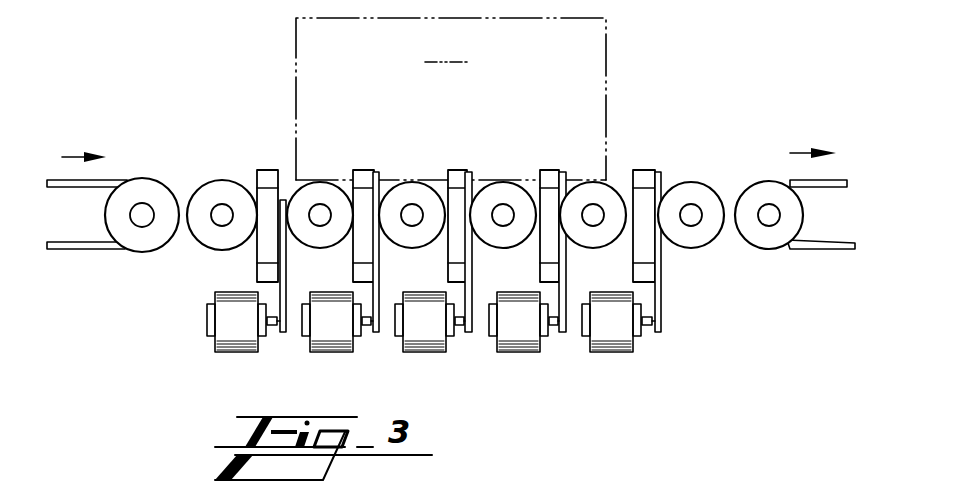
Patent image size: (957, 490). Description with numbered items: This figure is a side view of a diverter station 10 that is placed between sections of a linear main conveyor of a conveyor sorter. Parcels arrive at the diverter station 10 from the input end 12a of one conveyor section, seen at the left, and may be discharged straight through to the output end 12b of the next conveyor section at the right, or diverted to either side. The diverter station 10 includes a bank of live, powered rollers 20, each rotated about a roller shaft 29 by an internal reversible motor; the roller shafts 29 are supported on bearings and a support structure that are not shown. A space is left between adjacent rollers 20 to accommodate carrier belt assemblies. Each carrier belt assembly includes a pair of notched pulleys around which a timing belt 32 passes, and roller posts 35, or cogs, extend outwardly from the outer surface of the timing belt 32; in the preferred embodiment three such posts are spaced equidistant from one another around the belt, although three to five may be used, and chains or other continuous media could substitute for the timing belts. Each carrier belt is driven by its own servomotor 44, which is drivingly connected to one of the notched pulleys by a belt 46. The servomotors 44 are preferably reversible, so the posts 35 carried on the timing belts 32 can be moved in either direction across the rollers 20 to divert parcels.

The diverter station 10 is at (629, 62).
The input end 12a is at (112, 181).
The output end 12b is at (790, 182).
The powered rollers 20 is at (207, 188).
The roller shafts 29 is at (216, 222).
The timing belt 32 is at (263, 262).
The roller posts 35 is at (267, 170).
The servomotor 44 is at (240, 353).
The belt 46 is at (287, 266).